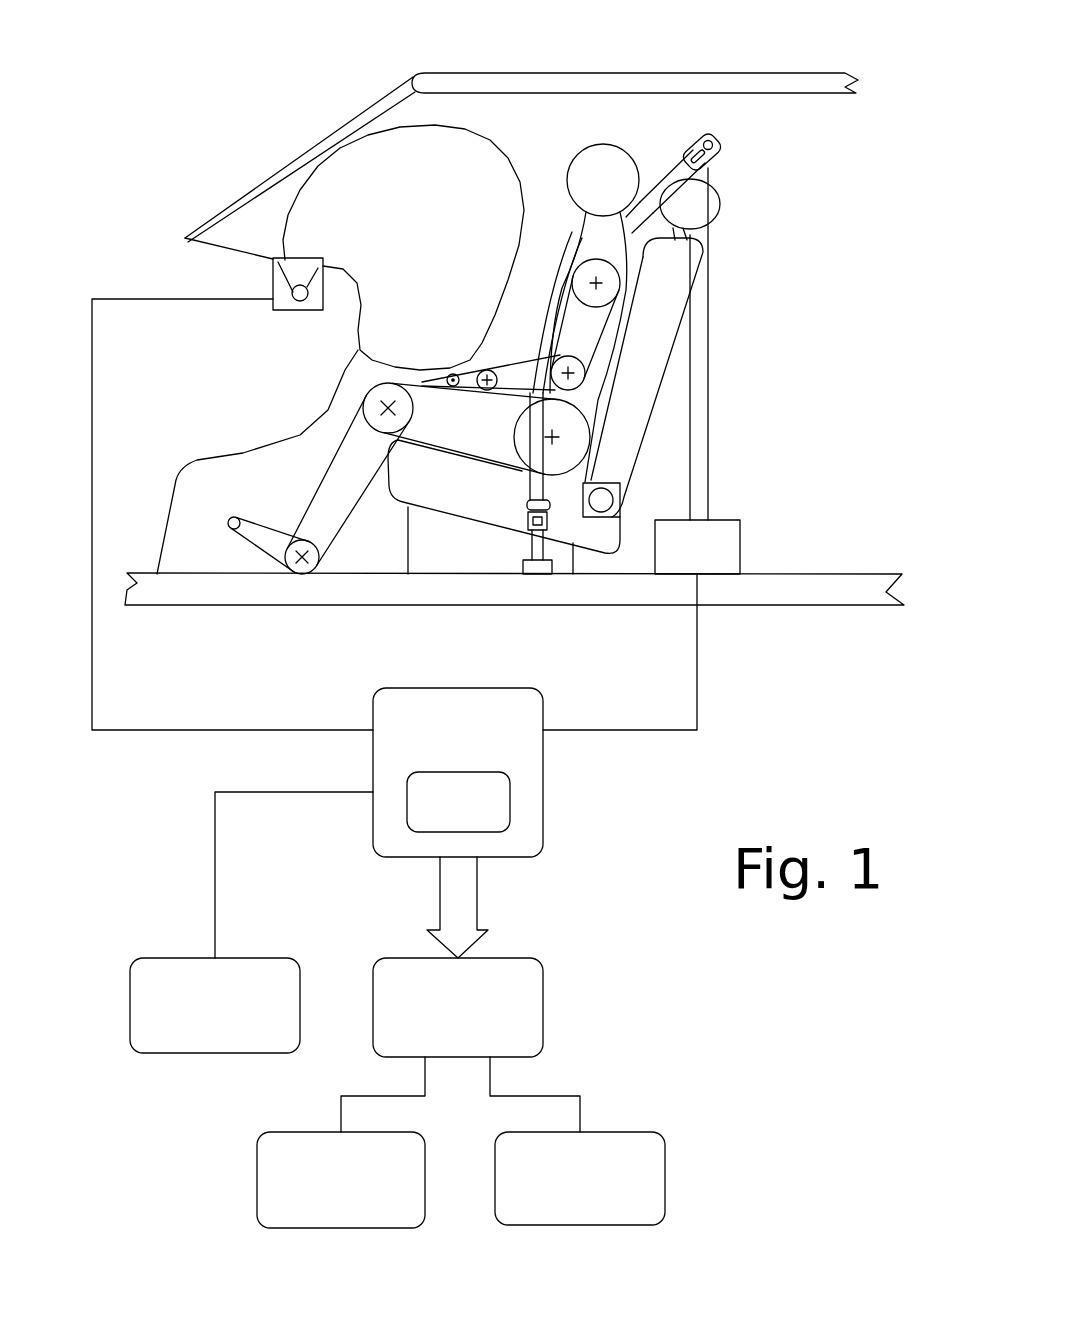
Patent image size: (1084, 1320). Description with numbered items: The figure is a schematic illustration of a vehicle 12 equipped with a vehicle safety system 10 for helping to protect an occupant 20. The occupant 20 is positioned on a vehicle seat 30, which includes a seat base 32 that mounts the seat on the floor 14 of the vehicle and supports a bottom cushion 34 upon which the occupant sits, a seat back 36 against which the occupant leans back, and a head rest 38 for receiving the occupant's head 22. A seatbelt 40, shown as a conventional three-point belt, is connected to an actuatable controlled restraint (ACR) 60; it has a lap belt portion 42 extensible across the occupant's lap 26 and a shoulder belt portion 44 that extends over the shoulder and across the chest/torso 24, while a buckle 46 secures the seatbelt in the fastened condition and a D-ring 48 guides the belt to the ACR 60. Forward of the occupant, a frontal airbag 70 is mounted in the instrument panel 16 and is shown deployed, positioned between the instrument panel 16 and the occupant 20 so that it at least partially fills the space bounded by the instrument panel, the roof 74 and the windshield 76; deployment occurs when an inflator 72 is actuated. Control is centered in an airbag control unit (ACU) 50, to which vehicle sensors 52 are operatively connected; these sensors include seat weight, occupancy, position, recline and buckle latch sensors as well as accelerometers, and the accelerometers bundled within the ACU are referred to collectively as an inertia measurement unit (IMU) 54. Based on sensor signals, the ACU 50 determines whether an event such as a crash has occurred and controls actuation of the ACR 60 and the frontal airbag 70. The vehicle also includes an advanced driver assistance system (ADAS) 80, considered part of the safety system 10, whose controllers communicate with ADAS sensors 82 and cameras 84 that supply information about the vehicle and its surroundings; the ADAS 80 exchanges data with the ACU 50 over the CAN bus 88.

The vehicle safety system 10 is at (225, 177).
The vehicle 12 is at (228, 88).
The floor 14 is at (393, 583).
The instrument panel 16 is at (240, 427).
The occupant 20 is at (540, 250).
The head 22 is at (590, 167).
The chest/torso 24 is at (557, 298).
The lap 26 is at (507, 372).
The vehicle seat 30 is at (728, 337).
The seat base 32 is at (457, 553).
The bottom cushion 34 is at (497, 517).
The seat back 36 is at (645, 395).
The head rest 38 is at (705, 210).
The seatbelt 40 is at (532, 337).
The lap belt portion 42 is at (515, 430).
The shoulder belt portion 44 is at (650, 188).
The buckle 46 is at (527, 503).
The D-ring 48 is at (717, 152).
The airbag control unit (ACU) 50 is at (530, 702).
The vehicle sensors 52 is at (245, 968).
The inertia measurement unit (IMU) 54 is at (512, 793).
The actuatable controlled restraint (ACR) 60 is at (720, 520).
The frontal airbag 70 is at (388, 135).
The inflator 72 is at (300, 295).
The roof 74 is at (505, 83).
The windshield 76 is at (328, 147).
The advanced driver assistance system (ADAS) 80 is at (500, 973).
The ADAS sensors 82 is at (655, 1142).
The cameras 84 is at (267, 1142).
The CAN bus 88 is at (470, 895).